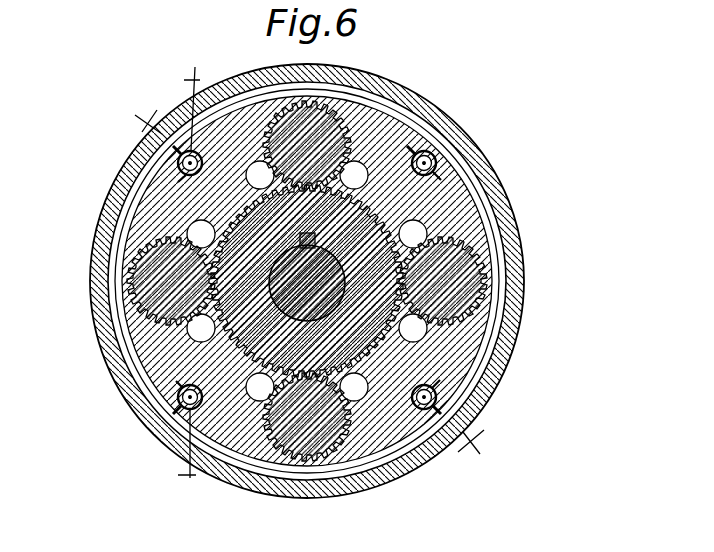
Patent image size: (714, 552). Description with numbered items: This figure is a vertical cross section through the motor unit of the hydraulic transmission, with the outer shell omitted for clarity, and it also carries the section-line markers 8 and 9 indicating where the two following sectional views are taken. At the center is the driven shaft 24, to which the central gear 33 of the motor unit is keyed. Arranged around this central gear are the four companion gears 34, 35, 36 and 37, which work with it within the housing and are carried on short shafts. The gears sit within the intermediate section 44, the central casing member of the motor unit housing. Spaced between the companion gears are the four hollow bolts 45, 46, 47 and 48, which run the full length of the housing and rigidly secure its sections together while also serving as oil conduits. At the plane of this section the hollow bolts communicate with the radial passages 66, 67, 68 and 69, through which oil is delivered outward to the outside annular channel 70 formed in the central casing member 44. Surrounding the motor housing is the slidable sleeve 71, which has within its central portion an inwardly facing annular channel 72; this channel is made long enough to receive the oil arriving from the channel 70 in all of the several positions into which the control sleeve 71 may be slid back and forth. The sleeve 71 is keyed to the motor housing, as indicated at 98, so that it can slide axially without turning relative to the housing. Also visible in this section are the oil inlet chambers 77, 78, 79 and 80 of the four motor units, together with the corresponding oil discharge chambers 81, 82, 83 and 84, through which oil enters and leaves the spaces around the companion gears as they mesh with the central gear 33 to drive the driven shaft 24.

The section line 8- 8 is at (307, 281).
The section line 9- 9 is at (190, 272).
The driven shaft 24 is at (330, 250).
The central gear 33 is at (418, 330).
The companion gear 34 is at (470, 282).
The companion gear 35 is at (320, 448).
The companion gear 36 is at (132, 278).
The companion gear 37 is at (322, 128).
The intermediate section 44 is at (457, 217).
The hollow bolt 45 is at (434, 171).
The hollow bolt 46 is at (421, 409).
The hollow bolt 47 is at (178, 398).
The hollow bolt 48 is at (182, 173).
The radial passage 66 is at (430, 153).
The radial passage 67 is at (436, 398).
The radial passage 68 is at (182, 408).
The radial passage 69 is at (187, 157).
The outside annular channel 70 is at (520, 312).
The slidable sleeve 71 is at (531, 341).
The inwardly facing annular channel 72 is at (318, 432).
The oil inlet chamber 77 is at (462, 342).
The oil inlet chamber 78 is at (260, 394).
The oil inlet chamber 79 is at (198, 232).
The oil inlet chamber 80 is at (350, 165).
The oil discharge chamber 81 is at (414, 236).
The oil discharge chamber 82 is at (355, 394).
The oil discharge chamber 83 is at (198, 326).
The oil discharge chamber 84 is at (262, 165).
The key 98 is at (405, 108).